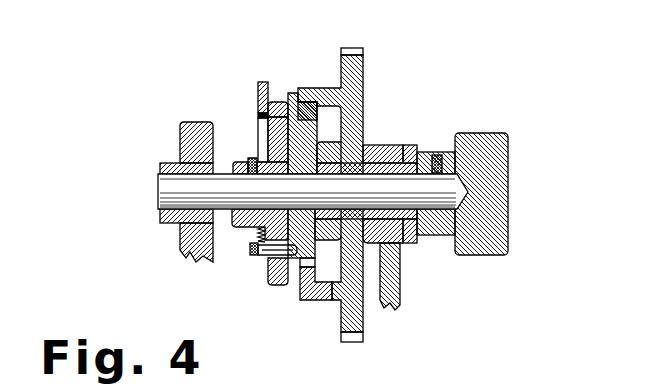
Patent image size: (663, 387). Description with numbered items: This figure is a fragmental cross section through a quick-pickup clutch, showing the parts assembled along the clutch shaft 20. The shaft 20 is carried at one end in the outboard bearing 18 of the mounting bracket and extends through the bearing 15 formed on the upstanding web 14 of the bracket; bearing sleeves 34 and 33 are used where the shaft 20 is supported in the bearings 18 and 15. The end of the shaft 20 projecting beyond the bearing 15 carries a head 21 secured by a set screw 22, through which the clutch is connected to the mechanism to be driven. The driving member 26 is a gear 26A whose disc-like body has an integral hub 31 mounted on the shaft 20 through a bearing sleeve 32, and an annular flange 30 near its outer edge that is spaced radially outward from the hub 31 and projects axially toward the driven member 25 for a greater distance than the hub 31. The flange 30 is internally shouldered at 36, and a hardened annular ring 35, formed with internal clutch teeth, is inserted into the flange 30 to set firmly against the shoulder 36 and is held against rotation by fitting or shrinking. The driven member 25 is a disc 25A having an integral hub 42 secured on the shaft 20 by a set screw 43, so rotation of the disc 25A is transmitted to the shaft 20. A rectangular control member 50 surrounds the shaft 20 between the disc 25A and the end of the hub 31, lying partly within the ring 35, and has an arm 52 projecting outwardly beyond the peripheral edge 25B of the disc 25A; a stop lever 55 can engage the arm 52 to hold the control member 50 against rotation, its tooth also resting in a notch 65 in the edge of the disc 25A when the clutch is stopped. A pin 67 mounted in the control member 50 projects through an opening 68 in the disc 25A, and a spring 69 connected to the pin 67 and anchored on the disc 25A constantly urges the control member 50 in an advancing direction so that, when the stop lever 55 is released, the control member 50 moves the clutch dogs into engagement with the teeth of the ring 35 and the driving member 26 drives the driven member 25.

The upstanding web 14 is at (400, 273).
The bearing 15 is at (384, 146).
The outboard bearing 18 is at (181, 122).
The clutch shaft 20 is at (172, 183).
The head 21 is at (510, 142).
The set screw 22 is at (437, 155).
The driven member 25 is at (266, 275).
The disc 25A is at (279, 140).
The peripheral edge 25B is at (273, 287).
The driving member 26 is at (336, 303).
The gear 26A is at (362, 327).
The annular flange 30 is at (329, 88).
The hub 31 is at (324, 146).
The bearing sleeve 32 is at (338, 213).
The bearing sleeve 33 is at (410, 145).
The bearing sleeve 34 is at (160, 222).
The hardened annular ring 35 is at (308, 104).
The internal shoulder 36 is at (325, 298).
The hub 42 is at (240, 222).
The set screw 43 is at (251, 160).
The control member 50 is at (299, 259).
The arm 52 is at (293, 93).
The stop lever 55 is at (258, 85).
The notch 65 is at (273, 102).
The pin 67 is at (267, 252).
The opening 68 is at (270, 260).
The spring 69 is at (258, 236).